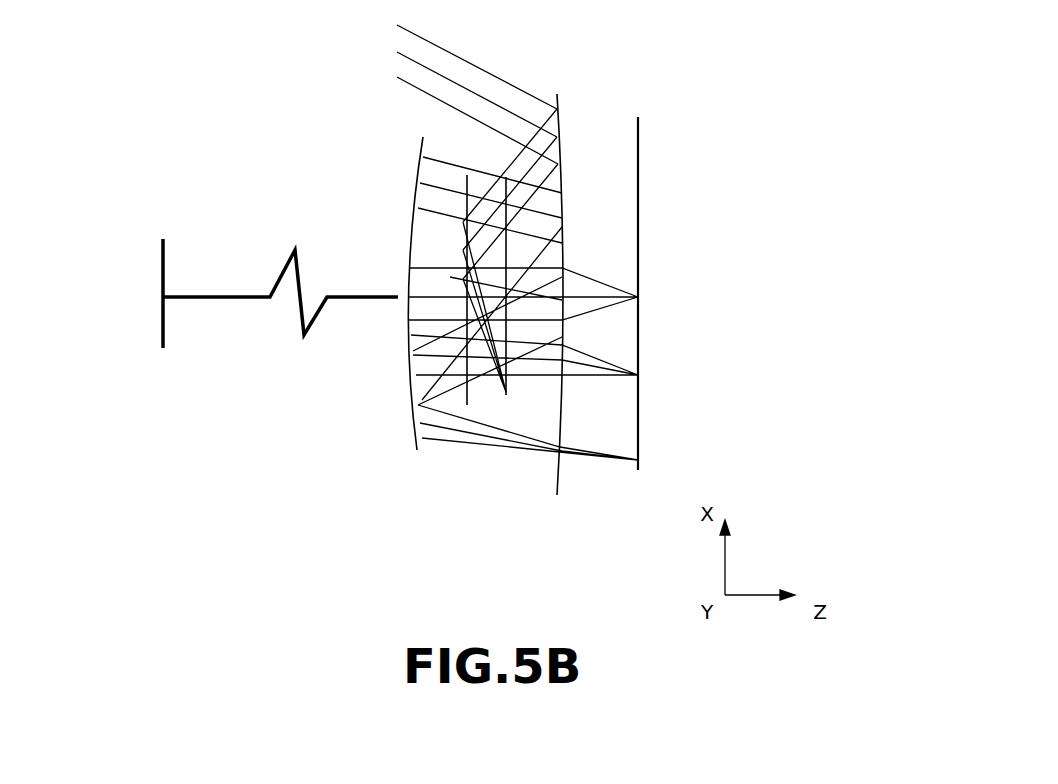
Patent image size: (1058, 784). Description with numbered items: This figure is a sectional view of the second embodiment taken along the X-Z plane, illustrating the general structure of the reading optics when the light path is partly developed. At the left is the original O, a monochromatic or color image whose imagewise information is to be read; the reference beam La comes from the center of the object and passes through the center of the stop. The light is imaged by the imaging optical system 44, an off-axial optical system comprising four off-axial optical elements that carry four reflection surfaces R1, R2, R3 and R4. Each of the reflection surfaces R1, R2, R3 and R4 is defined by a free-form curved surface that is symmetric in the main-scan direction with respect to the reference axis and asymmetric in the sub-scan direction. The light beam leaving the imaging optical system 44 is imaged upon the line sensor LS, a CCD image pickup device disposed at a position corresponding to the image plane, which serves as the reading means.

The original O is at (163, 267).
The reference beam La is at (238, 297).
The imaging optical system 44 is at (477, 304).
The fourth off-axial reflection surface R4 is at (407, 342).
The second off-axial reflection surface R2 is at (467, 392).
The third off-axial reflection surface R3 is at (505, 403).
The first off-axial reflection surface R1 is at (562, 167).
The line sensor LS is at (638, 413).